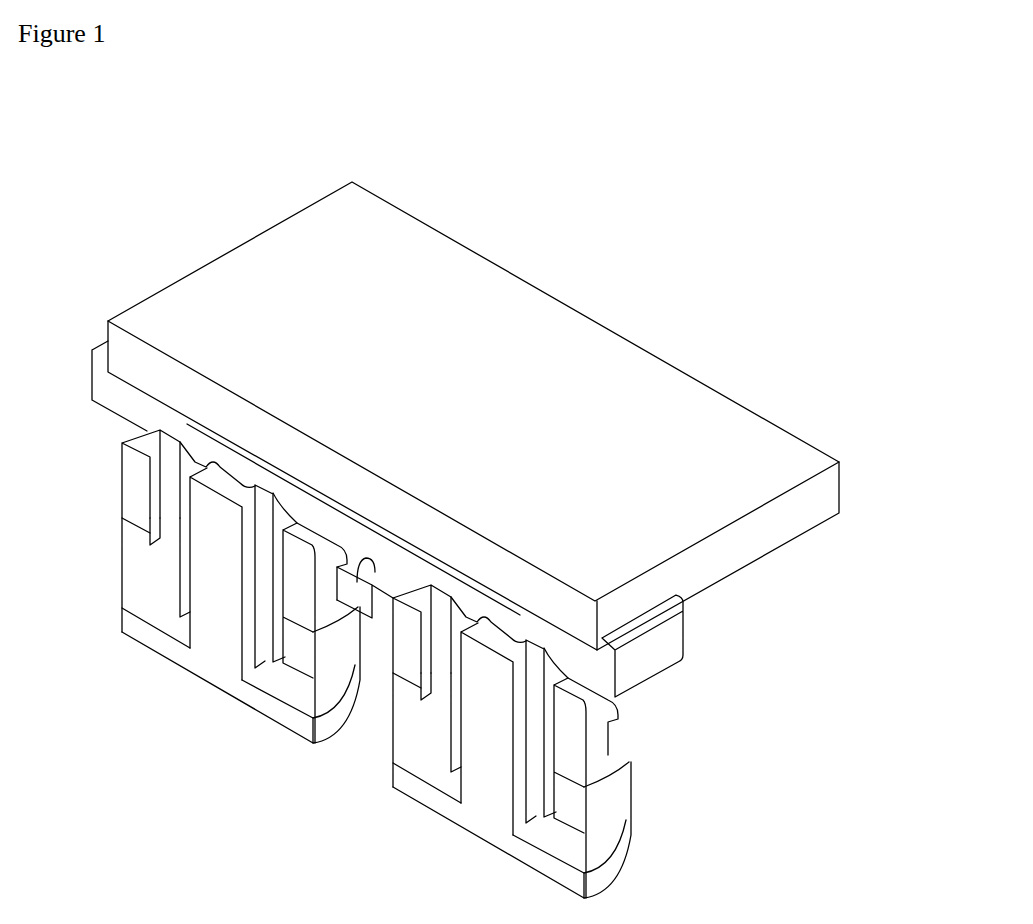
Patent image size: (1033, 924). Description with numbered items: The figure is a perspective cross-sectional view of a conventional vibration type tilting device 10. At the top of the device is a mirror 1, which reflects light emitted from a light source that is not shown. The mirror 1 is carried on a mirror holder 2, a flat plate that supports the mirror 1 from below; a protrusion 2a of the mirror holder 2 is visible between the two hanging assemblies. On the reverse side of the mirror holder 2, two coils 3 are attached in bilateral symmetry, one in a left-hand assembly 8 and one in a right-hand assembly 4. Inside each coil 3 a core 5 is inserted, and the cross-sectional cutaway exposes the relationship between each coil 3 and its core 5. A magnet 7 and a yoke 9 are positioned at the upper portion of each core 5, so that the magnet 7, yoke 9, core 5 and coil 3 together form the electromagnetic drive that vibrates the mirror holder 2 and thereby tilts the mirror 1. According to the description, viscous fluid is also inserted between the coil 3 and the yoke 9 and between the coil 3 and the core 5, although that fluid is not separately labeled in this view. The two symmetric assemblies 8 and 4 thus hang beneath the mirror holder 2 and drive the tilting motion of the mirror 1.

The connector assembly 10 is at (640, 197).
The mirror 1 is at (708, 405).
The mirror holder 2 is at (663, 657).
The base plate protrusion 2a is at (360, 607).
The right leg assembly 4 is at (845, 436).
The left leg assembly 8 is at (165, 683).
The yoke 9 is at (135, 478).
The magnet 7 is at (133, 570).
The core 5 is at (215, 633).
The coil 3 is at (262, 670).